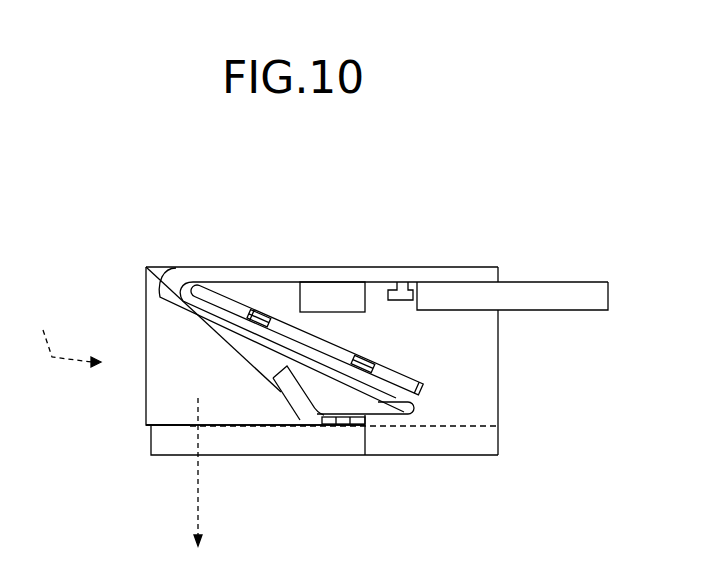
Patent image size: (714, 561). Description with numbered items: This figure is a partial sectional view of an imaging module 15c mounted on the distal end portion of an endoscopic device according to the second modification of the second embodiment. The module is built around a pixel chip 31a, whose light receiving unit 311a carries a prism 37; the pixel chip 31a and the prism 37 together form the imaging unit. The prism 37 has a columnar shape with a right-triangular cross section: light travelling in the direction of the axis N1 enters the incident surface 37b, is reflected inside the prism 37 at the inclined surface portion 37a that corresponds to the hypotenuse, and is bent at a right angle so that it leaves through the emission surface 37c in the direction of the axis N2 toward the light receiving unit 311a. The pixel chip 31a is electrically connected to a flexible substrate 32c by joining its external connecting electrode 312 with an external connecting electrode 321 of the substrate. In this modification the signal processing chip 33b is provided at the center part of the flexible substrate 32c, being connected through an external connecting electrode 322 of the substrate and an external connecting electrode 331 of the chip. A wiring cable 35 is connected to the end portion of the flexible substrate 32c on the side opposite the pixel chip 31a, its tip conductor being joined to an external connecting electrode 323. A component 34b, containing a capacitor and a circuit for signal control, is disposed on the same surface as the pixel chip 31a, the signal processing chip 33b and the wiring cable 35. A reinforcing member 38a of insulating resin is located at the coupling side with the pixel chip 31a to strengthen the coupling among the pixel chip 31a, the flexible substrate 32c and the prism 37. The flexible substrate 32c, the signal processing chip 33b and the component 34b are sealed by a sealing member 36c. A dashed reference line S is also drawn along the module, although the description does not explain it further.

The imaging module 15c is at (486, 222).
The pixel chip 31a is at (227, 448).
The light receiving unit 311a is at (187, 420).
The external connecting electrode 312 is at (333, 424).
The flexible substrate 32c is at (358, 268).
The external connecting electrode 321 is at (275, 384).
The external connecting electrode 322 is at (252, 319).
The external connecting electrode 323 is at (405, 288).
The signal processing chip 33b is at (263, 290).
The external connecting electrode 331 is at (230, 292).
The component 34b is at (316, 292).
The wiring cable 35 is at (566, 290).
The sealing member 36c is at (491, 399).
The prism 37 is at (158, 303).
The inclined surface portion 37a is at (156, 268).
The incident surface 37b is at (150, 291).
The emission surface 37c is at (177, 428).
The reinforcing member 38a is at (288, 410).
The reference plane S is at (462, 420).
The axis N1 is at (64, 336).
The axis N2 is at (193, 520).